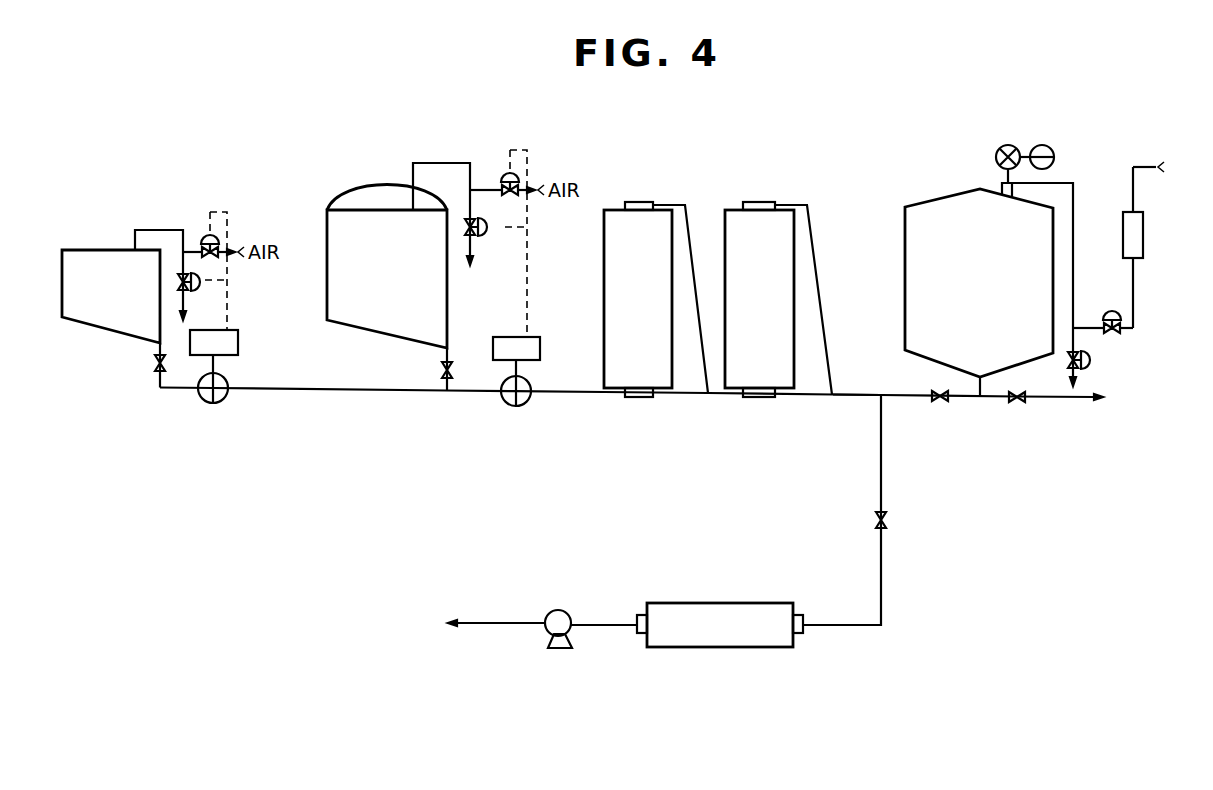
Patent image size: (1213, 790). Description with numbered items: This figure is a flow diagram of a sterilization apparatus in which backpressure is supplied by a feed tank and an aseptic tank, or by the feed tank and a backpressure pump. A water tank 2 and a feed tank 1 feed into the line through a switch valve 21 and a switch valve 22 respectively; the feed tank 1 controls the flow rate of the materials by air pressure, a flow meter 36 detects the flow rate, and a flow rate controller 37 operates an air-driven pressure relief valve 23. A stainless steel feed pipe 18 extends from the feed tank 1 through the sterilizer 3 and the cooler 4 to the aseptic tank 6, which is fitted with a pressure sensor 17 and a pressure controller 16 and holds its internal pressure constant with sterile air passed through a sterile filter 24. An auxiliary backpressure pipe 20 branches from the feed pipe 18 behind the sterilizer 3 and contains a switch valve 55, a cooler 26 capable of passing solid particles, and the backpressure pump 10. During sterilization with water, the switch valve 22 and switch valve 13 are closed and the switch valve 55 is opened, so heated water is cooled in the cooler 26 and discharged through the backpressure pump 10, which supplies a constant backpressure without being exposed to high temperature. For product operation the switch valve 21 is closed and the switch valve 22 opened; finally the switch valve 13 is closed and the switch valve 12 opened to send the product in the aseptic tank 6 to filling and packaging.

The feed tank 1 is at (364, 184).
The water tank 2 is at (100, 250).
The sterilizer 3 is at (614, 210).
The cooler 4 is at (730, 210).
The aseptic tank 6 is at (938, 198).
The backpressure pump 10 is at (560, 610).
The switch valve 12 is at (1015, 403).
The switch valve 13 is at (937, 402).
The pressure controller 16 is at (1055, 155).
The pressure sensor 17 is at (995, 157).
The feed pipe 18 is at (865, 391).
The auxiliary backpressure pipe 20 is at (882, 467).
The switch valve 21 is at (154, 364).
The switch valve 22 is at (442, 370).
The pressure relief valve 23 is at (205, 237).
The sterile filter 24 is at (1143, 236).
The cooler 26 is at (711, 601).
The flow meter 36 is at (210, 404).
The flow rate controller 37 is at (238, 345).
The switch valve 55 is at (888, 524).